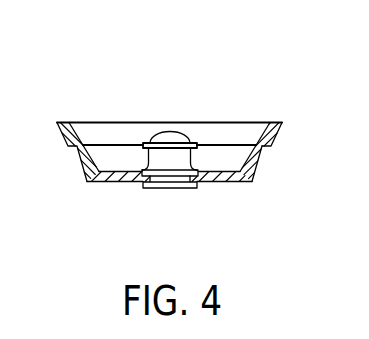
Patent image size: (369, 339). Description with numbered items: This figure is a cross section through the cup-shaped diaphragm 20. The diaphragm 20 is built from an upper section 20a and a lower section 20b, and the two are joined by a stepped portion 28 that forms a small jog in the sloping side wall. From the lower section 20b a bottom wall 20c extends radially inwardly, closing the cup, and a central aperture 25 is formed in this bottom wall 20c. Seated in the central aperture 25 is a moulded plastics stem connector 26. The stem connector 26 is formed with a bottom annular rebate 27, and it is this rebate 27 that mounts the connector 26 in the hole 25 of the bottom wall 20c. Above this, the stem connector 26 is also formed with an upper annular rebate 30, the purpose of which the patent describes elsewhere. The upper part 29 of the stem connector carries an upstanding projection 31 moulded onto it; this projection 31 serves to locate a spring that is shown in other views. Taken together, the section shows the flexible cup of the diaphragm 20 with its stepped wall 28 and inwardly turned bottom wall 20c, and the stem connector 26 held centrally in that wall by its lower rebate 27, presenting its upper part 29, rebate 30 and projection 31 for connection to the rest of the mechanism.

The cup-shaped diaphragm 20 is at (80, 122).
The upper section 20a is at (275, 147).
The lower section 20b is at (255, 182).
The bottom wall 20c is at (214, 182).
The central aperture 25 is at (157, 188).
The stem connector 26 is at (146, 188).
The bottom annular rebate 27 is at (225, 144).
The stepped portion 28 is at (267, 156).
The upper part of the stem connector 29 is at (205, 147).
The upper annular rebate 30 is at (142, 157).
The upstanding projection 31 is at (167, 141).